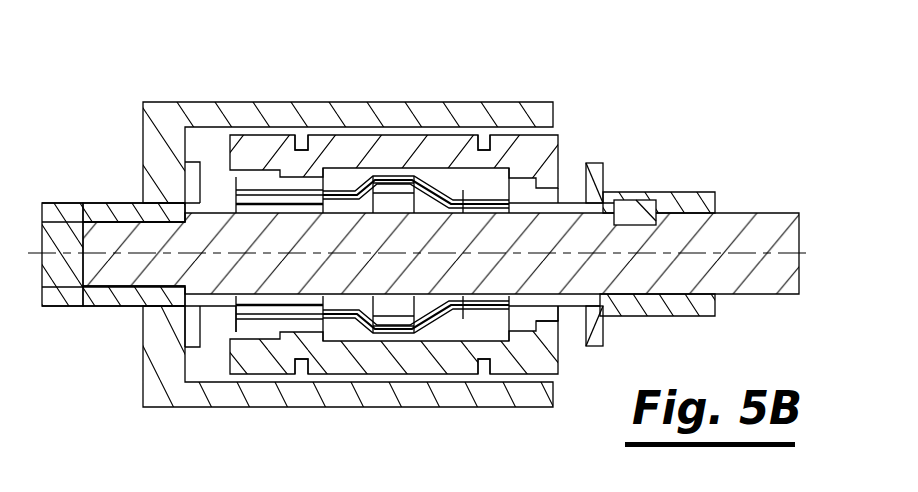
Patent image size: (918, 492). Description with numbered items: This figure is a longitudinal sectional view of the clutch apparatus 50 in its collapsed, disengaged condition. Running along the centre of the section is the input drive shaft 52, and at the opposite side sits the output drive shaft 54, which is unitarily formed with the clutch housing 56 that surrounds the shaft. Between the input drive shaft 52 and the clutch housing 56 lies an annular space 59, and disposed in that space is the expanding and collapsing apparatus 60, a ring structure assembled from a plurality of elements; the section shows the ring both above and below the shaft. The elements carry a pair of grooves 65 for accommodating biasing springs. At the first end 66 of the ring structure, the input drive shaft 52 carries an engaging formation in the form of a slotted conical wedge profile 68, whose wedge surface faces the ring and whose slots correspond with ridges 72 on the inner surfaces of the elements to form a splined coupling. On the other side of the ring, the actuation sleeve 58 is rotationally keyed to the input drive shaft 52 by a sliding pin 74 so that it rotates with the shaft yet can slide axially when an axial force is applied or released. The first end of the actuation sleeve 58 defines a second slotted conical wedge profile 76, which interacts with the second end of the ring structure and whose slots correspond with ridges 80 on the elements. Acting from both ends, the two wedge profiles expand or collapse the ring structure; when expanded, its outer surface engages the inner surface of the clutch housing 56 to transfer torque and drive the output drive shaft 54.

The clutch apparatus 50 is at (558, 79).
The input drive shaft 52 is at (735, 276).
The output drive shaft 54 is at (93, 294).
The clutch housing 56 is at (364, 394).
The actuation sleeve 58 is at (649, 308).
The annular space 59 is at (188, 351).
The expanding and collapsing apparatus 60 is at (590, 142).
The grooves 65 is at (304, 146).
The first end of the ring structure 66 is at (210, 118).
The slotted conical wedge profile 68 is at (218, 331).
The ridges 72 is at (232, 180).
The sliding pin 74 is at (633, 211).
The slotted conical wedge profile 76 is at (551, 314).
The ridges 80 is at (559, 326).